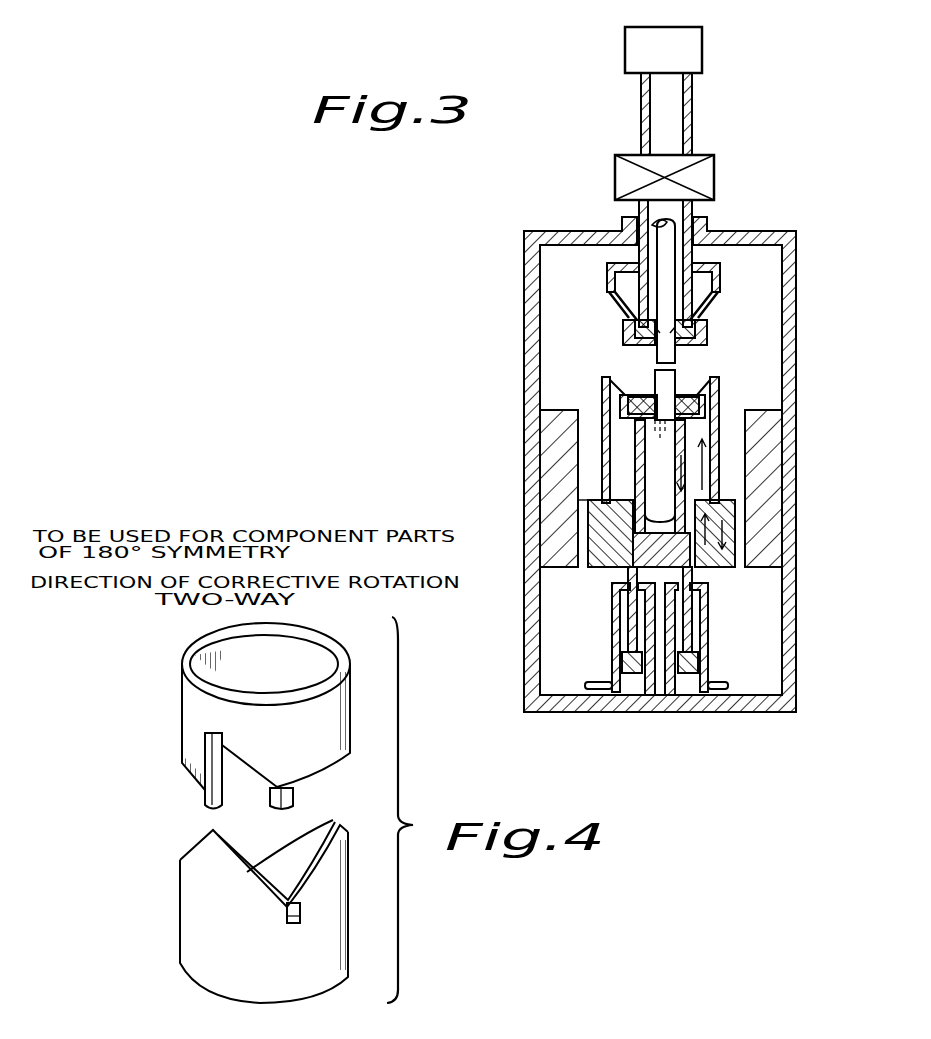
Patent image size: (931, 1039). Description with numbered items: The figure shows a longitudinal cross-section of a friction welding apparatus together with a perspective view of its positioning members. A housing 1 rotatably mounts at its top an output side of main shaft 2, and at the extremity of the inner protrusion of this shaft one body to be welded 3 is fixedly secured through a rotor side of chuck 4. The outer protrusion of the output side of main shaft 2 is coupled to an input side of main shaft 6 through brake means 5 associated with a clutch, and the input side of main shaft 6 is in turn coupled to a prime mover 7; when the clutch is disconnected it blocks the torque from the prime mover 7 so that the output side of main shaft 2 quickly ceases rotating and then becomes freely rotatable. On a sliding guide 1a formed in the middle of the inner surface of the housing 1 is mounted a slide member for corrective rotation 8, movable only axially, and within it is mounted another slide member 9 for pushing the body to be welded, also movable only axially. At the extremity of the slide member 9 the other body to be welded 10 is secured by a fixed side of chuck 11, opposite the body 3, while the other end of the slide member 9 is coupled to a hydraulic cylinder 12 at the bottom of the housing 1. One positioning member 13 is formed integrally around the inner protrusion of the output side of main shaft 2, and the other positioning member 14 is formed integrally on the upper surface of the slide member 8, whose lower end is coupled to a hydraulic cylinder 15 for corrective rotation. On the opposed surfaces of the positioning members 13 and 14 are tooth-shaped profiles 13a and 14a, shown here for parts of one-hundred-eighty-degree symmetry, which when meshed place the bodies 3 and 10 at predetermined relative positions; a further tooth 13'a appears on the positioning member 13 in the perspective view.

In FIG. 3, the housing 1 is at (797, 295).
In FIG. 3, the sliding guide 1a is at (538, 478).
In FIG. 3, the output side of main shaft 2 is at (639, 207).
In FIG. 3, the body to be welded 3 is at (675, 350).
In FIG. 3, the rotor side of chuck 4 is at (625, 333).
In FIG. 3, the brake means 5 is at (615, 173).
In FIG. 3, the input side of main shaft 6 is at (641, 110).
In FIG. 3, the prime mover 7 is at (625, 48).
In FIG. 3, the slide member for corrective rotation 8 is at (593, 563).
In FIG. 3, the slide member for pushing the body to be welded 9 is at (646, 568).
In FIG. 3, the other body to be welded 10 is at (675, 378).
In FIG. 3, the fixed side of chuck 11 is at (622, 400).
In FIG. 3, the hydraulic cylinder for pushing the body to be welded 12 is at (708, 658).
In FIG. 3, the positioning member 13 is at (686, 291).
In FIG. 4, the positioning member 13 is at (231, 706).
In FIG. 3, the tooth-shaped profile 13a is at (705, 303).
In FIG. 4, the tooth-shaped profile 13a is at (322, 770).
In FIG. 4, the cup leg 13'a is at (270, 815).
In FIG. 3, the other positioning member 14 is at (719, 393).
In FIG. 4, the other positioning member 14 is at (203, 960).
In FIG. 3, the tooth-shaped profile 14a is at (633, 370).
In FIG. 4, the tooth-shaped profile 14a is at (213, 830).
In FIG. 3, the hydraulic cylinder for corrective rotation 15 is at (622, 663).